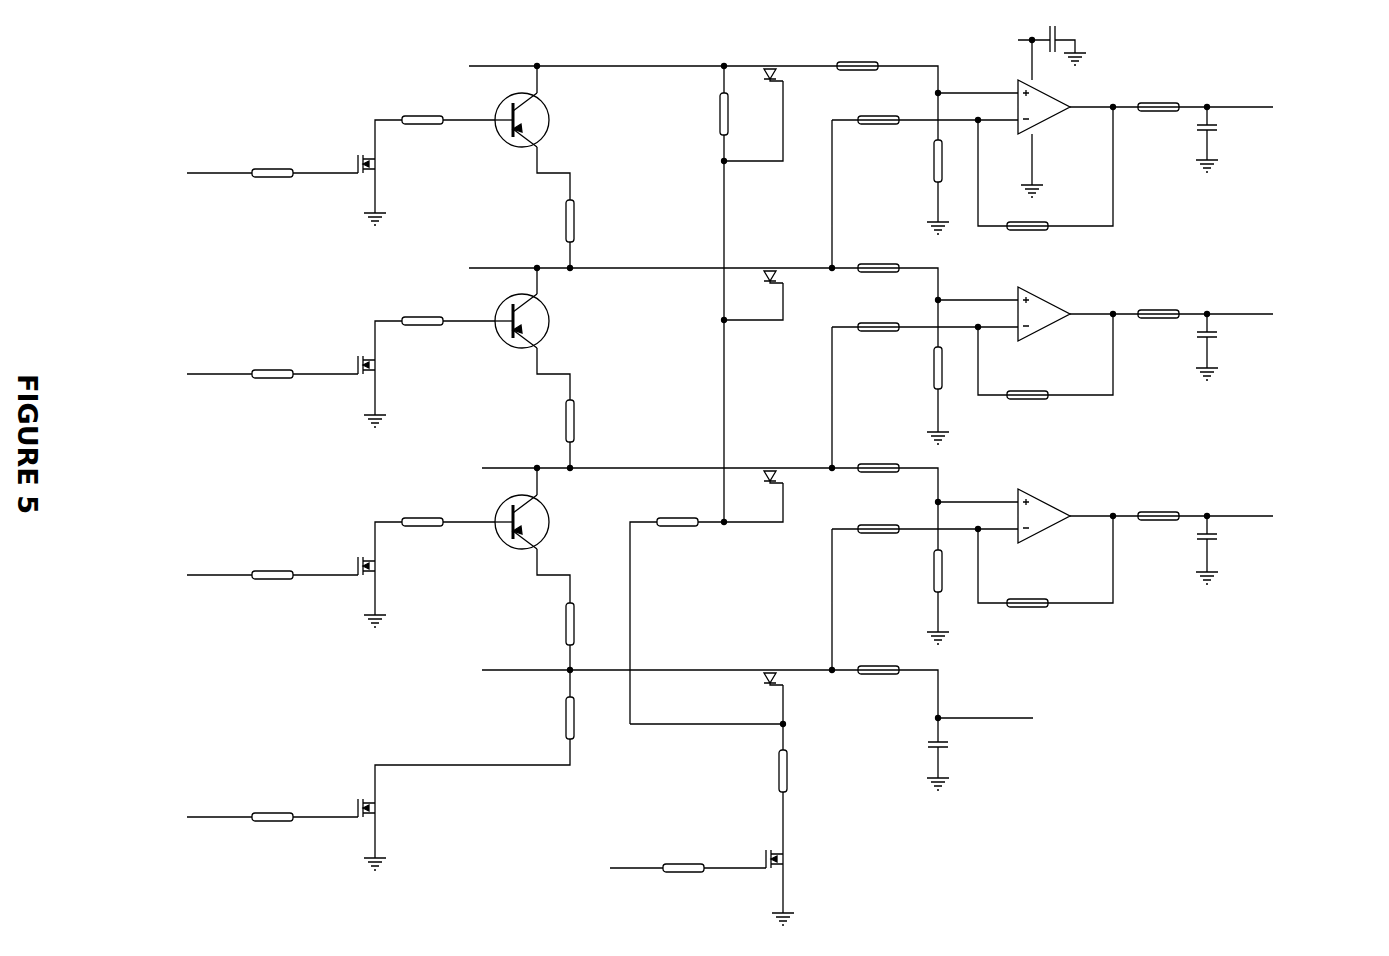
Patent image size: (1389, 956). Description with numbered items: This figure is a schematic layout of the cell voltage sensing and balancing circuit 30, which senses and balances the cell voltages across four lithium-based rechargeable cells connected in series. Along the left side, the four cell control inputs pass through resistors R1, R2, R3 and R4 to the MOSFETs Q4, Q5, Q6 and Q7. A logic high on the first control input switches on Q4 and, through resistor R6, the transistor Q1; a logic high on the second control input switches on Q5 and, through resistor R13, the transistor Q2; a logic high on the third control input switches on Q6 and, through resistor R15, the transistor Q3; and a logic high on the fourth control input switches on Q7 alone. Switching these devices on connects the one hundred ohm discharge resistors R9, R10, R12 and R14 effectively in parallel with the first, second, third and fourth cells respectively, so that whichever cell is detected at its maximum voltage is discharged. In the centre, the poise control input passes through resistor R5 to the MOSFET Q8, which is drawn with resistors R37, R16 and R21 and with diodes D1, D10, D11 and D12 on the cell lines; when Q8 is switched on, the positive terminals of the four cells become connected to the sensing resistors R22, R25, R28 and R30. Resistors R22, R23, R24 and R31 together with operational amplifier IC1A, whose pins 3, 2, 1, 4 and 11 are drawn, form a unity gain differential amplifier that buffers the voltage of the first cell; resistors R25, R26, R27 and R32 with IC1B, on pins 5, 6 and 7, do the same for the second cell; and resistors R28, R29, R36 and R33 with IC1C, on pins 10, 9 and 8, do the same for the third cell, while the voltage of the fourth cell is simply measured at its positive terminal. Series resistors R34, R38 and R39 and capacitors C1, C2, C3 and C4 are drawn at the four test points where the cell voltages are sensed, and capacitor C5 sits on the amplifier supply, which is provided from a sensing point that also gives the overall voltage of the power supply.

The cell voltage sensing and balancing circuit 30 is at (787, 471).
The MOSFET Q1 is at (540, 120).
The MOSFET Q2 is at (540, 321).
The MOSFET Q3 is at (540, 522).
The MOSFET Q4 is at (385, 163).
The MOSFET Q5 is at (385, 364).
The MOSFET Q6 is at (385, 565).
The MOSFET Q7 is at (385, 807).
The MOSFET Q8 is at (795, 862).
The operational amplifier IC1A is at (1025, 112).
The operational amplifier IC1B is at (1025, 312).
The operational amplifier IC1C is at (1025, 514).
The diode D1 is at (767, 59).
The diode D10 is at (767, 261).
The diode D11 is at (767, 461).
The diode D12 is at (767, 663).
The capacitor C1 is at (1214, 131).
The capacitor C2 is at (1214, 338).
The capacitor C3 is at (1211, 537).
The capacitor C4 is at (946, 749).
The capacitor C5 is at (1062, 32).
The resistor R1 is at (272, 173).
The resistor R2 is at (272, 374).
The resistor R3 is at (272, 575).
The resistor R4 is at (272, 817).
The resistor R5 is at (683, 869).
The resistor R6 is at (422, 120).
The resistor R9 is at (583, 221).
The discharge resistor R10 is at (583, 421).
The discharge resistor R12 is at (583, 624).
The resistor R13 is at (422, 321).
The discharge resistor R14 is at (583, 718).
The resistor R15 is at (422, 522).
The resistor R16 is at (677, 520).
The resistor R21 is at (734, 113).
The resistor R22 is at (857, 65).
The resistor R23 is at (878, 119).
The resistor R24 is at (951, 161).
The resistor R25 is at (878, 267).
The resistor R26 is at (1158, 107).
The resistor R27 is at (951, 368).
The resistor R28 is at (878, 326).
The resistor R29 is at (878, 467).
The resistor R30 is at (951, 571).
The resistor R31 is at (1027, 227).
The resistor R32 is at (1027, 396).
The resistor R33 is at (1027, 604).
The resistor R34 is at (878, 528).
The resistor R36 is at (878, 669).
The resistor R37 is at (793, 771).
The resistor R38 is at (1158, 314).
The resistor R39 is at (1158, 516).
The op amp output pin 1 is at (1091, 101).
The op amp inverting input pin 2 is at (998, 114).
The op amp non-inverting input pin 3 is at (978, 87).
The op amp supply pin 4 is at (1027, 60).
The op amp non-inverting input pin 5 is at (978, 294).
The op amp inverting input pin 6 is at (998, 321).
The op amp output pin 7 is at (1091, 308).
The op amp output pin 8 is at (1091, 510).
The op amp inverting input pin 9 is at (998, 523).
The apparatus 10 is at (978, 496).
The op amp ground pin 11 is at (1026, 159).